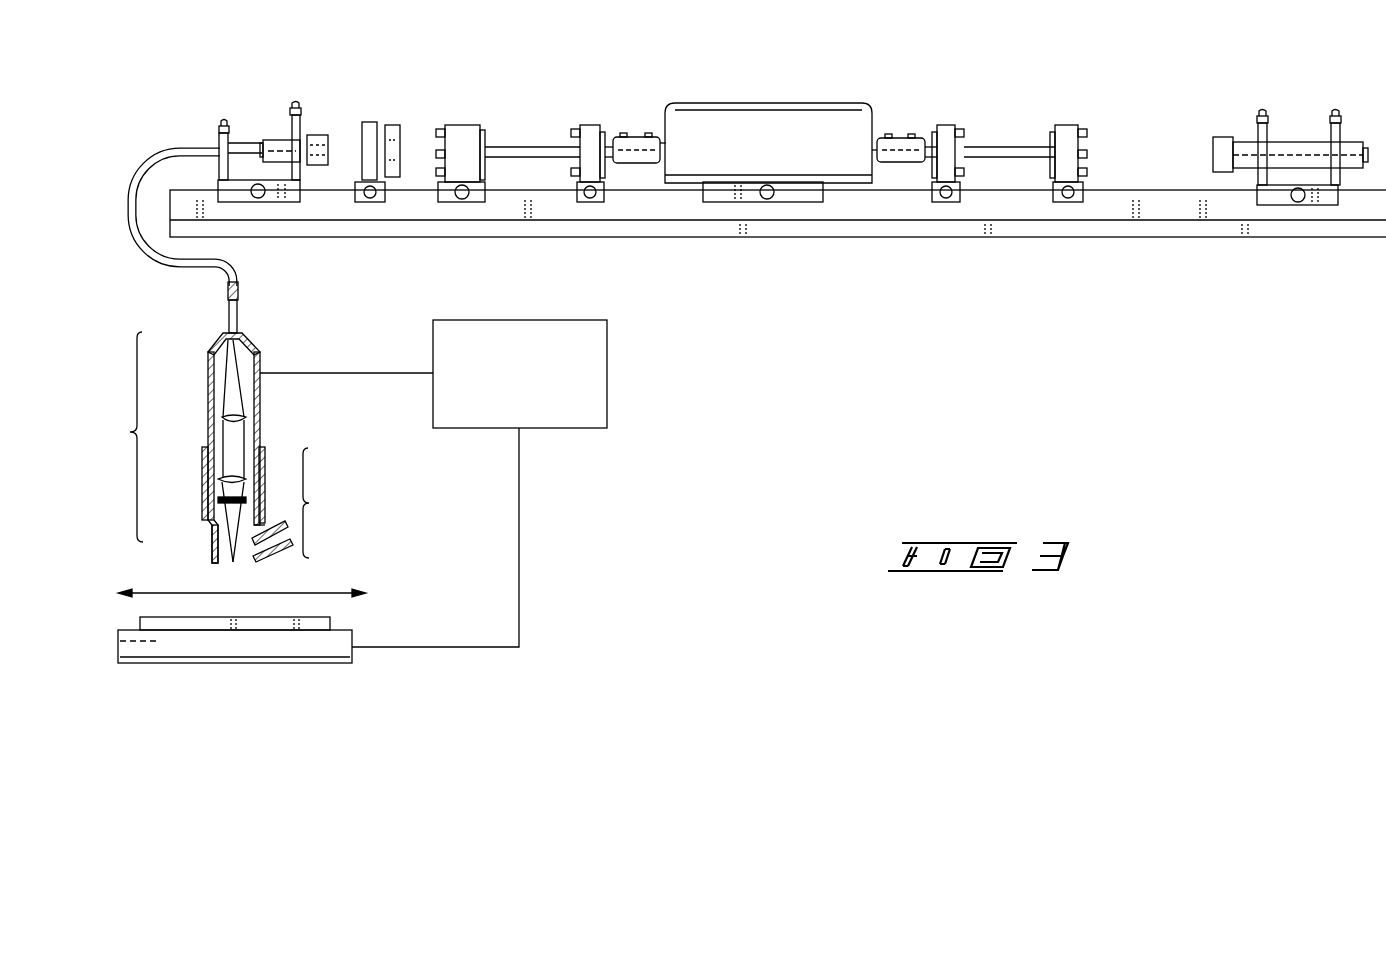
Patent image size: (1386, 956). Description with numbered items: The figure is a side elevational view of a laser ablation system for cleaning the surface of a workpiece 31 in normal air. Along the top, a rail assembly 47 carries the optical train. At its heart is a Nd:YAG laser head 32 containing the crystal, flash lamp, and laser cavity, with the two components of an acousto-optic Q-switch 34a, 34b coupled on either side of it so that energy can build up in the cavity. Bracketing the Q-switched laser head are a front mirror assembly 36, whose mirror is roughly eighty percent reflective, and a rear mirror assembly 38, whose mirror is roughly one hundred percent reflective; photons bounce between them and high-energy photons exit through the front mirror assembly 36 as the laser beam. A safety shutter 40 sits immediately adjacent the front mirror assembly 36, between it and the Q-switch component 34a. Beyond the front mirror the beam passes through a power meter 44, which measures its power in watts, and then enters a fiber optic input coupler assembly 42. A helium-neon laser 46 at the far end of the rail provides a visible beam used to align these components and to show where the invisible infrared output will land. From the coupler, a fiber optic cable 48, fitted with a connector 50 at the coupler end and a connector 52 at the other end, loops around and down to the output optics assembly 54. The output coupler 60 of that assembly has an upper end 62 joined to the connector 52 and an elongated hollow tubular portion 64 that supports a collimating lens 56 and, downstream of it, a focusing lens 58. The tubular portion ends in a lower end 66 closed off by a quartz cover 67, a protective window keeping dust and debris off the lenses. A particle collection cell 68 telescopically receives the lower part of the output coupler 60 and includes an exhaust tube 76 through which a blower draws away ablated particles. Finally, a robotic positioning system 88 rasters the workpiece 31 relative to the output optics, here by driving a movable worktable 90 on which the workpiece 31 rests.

The workpiece 31 is at (330, 623).
The Nd:YAG laser head 32 is at (770, 152).
The acousto-optic Q-switch component 34a is at (640, 150).
The acousto-optic Q-switch component 34b is at (897, 152).
The front mirror assembly 36 is at (455, 140).
The rear mirror assembly 38 is at (1067, 137).
The safety shutter 40 is at (470, 130).
The fiber optic input coupler assembly 42 is at (328, 146).
The power meter 44 is at (400, 147).
The helium-neon laser 46 is at (1295, 153).
The rail assembly 47 is at (412, 205).
The fiber optic cable 48 is at (169, 146).
The connector 50 is at (262, 141).
The connector 52 is at (238, 292).
The output optics assembly 54 is at (118, 437).
The collimating lens 56 is at (256, 420).
The focusing lens 58 is at (258, 478).
The output coupler 60 is at (208, 385).
The upper end 62 is at (218, 343).
The elongated hollow tubular portion 64 is at (221, 425).
The lower end 66 is at (207, 525).
The quartz cover 67 is at (214, 517).
The particle collection cell 68 is at (300, 503).
The exhaust tube 76 is at (290, 550).
The robotic positioning system 88 is at (607, 373).
The movable worktable 90 is at (263, 663).